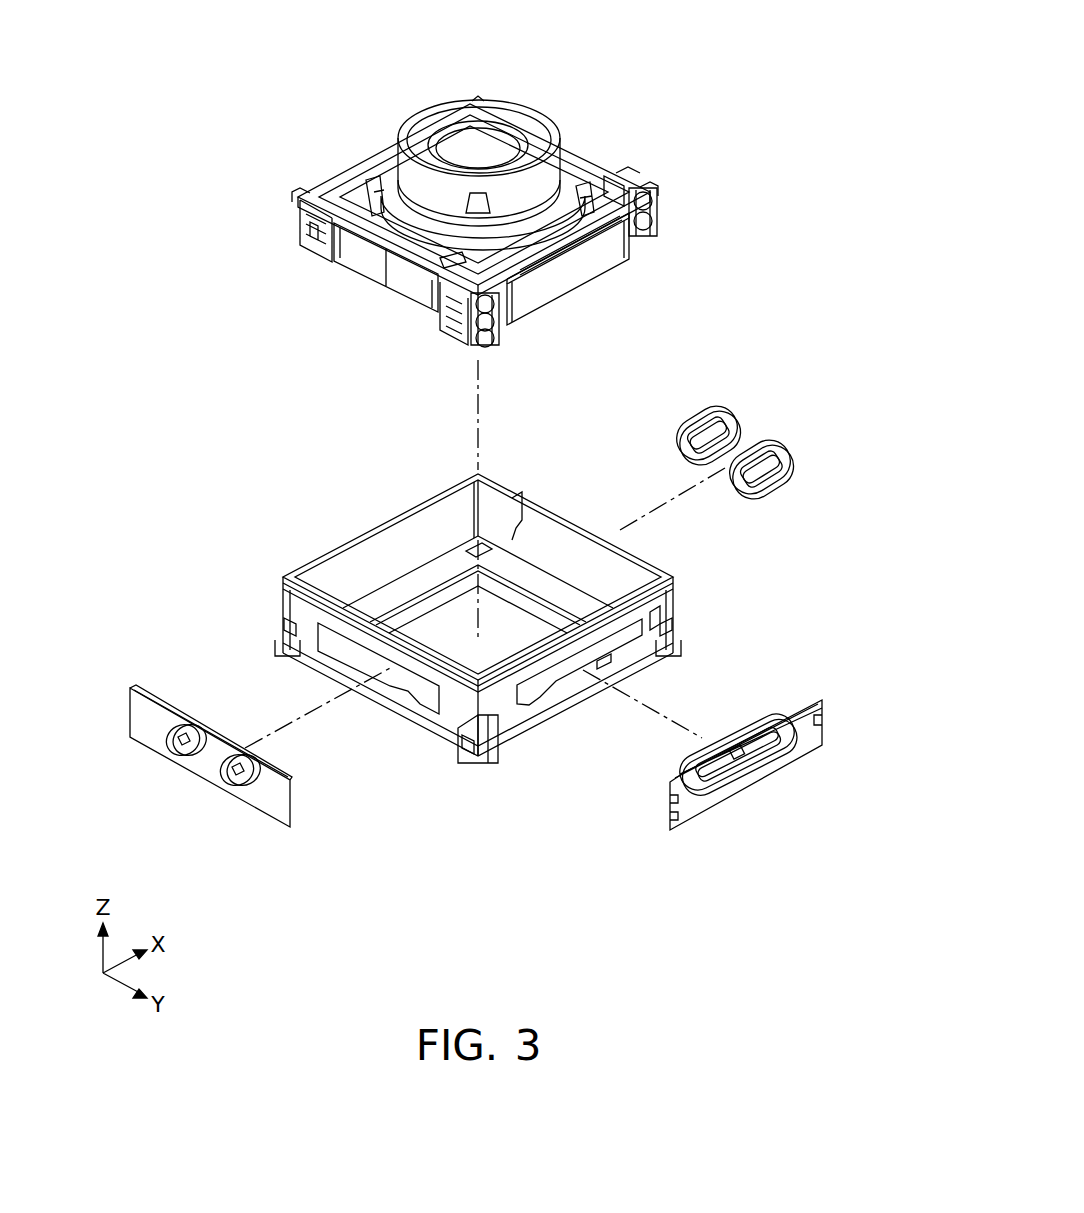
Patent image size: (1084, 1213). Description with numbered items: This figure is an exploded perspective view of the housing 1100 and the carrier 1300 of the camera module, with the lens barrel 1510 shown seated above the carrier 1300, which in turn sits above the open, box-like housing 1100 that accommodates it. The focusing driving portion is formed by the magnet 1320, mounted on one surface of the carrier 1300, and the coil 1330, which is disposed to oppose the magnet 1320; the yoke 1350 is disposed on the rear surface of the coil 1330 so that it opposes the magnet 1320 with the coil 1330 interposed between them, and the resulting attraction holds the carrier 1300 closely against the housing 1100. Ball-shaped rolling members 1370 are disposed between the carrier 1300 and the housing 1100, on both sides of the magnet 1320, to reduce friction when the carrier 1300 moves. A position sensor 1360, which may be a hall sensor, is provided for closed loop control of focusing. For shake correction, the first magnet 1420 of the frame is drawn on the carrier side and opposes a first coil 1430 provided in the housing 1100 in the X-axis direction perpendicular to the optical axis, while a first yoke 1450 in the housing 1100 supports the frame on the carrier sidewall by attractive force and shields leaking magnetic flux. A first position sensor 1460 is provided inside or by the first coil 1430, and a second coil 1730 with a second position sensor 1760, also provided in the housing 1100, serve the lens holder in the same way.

The housing 1100 is at (672, 602).
The carrier 1300 is at (623, 177).
The magnet 1320 is at (577, 277).
The coil 1330 is at (722, 797).
The yoke 1350 is at (808, 740).
The position sensor 1360 is at (753, 760).
The rolling member 1370 is at (654, 224).
The first magnet 1420 is at (340, 260).
The first coil 1430 is at (183, 752).
The first yoke 1450 is at (272, 812).
The first position sensor 1460 is at (235, 778).
The lens barrel 1510 is at (507, 133).
The second coil 1730 is at (757, 440).
The second position sensor 1760 is at (688, 436).